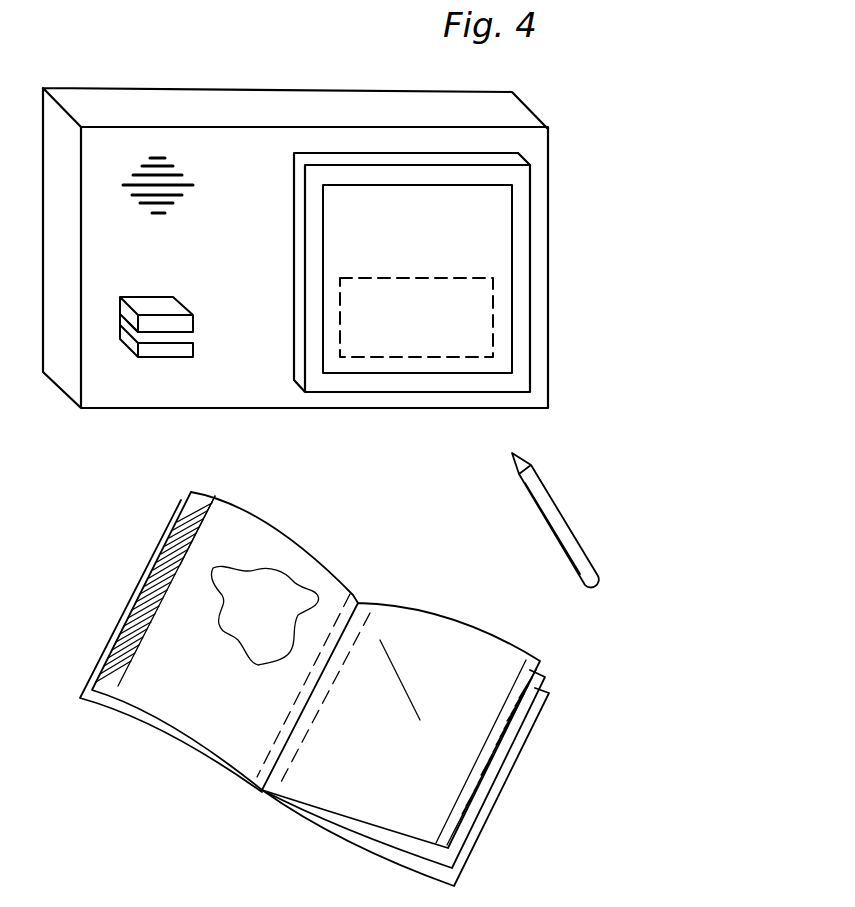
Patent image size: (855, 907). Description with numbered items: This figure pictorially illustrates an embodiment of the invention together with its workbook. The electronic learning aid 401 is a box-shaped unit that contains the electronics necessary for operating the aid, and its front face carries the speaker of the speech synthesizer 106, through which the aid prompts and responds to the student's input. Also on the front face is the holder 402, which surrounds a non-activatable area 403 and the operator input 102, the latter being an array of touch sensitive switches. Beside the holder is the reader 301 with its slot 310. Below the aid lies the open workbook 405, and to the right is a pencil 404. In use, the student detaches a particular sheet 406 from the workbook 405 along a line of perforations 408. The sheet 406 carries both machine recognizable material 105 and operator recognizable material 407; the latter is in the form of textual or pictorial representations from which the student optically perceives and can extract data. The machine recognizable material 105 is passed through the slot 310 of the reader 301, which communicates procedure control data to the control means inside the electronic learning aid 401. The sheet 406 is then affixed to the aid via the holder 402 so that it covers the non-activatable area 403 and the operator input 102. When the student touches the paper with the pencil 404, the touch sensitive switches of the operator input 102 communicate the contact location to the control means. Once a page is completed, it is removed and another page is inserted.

The electronic learning aid 401 is at (521, 112).
The speaker of the speech synthesizer 106 is at (203, 183).
The holder 402 is at (522, 218).
The non-activatable area 403 is at (338, 230).
The operator input 102 is at (480, 318).
The reader 301 is at (232, 290).
The slot 310 is at (191, 337).
The machine recognizable material 105 is at (210, 487).
The sheet 406 is at (268, 531).
The operator recognizable material 407 is at (302, 597).
The line of perforations 408 is at (368, 620).
The workbook 405 is at (262, 792).
The pencil 404 is at (570, 535).